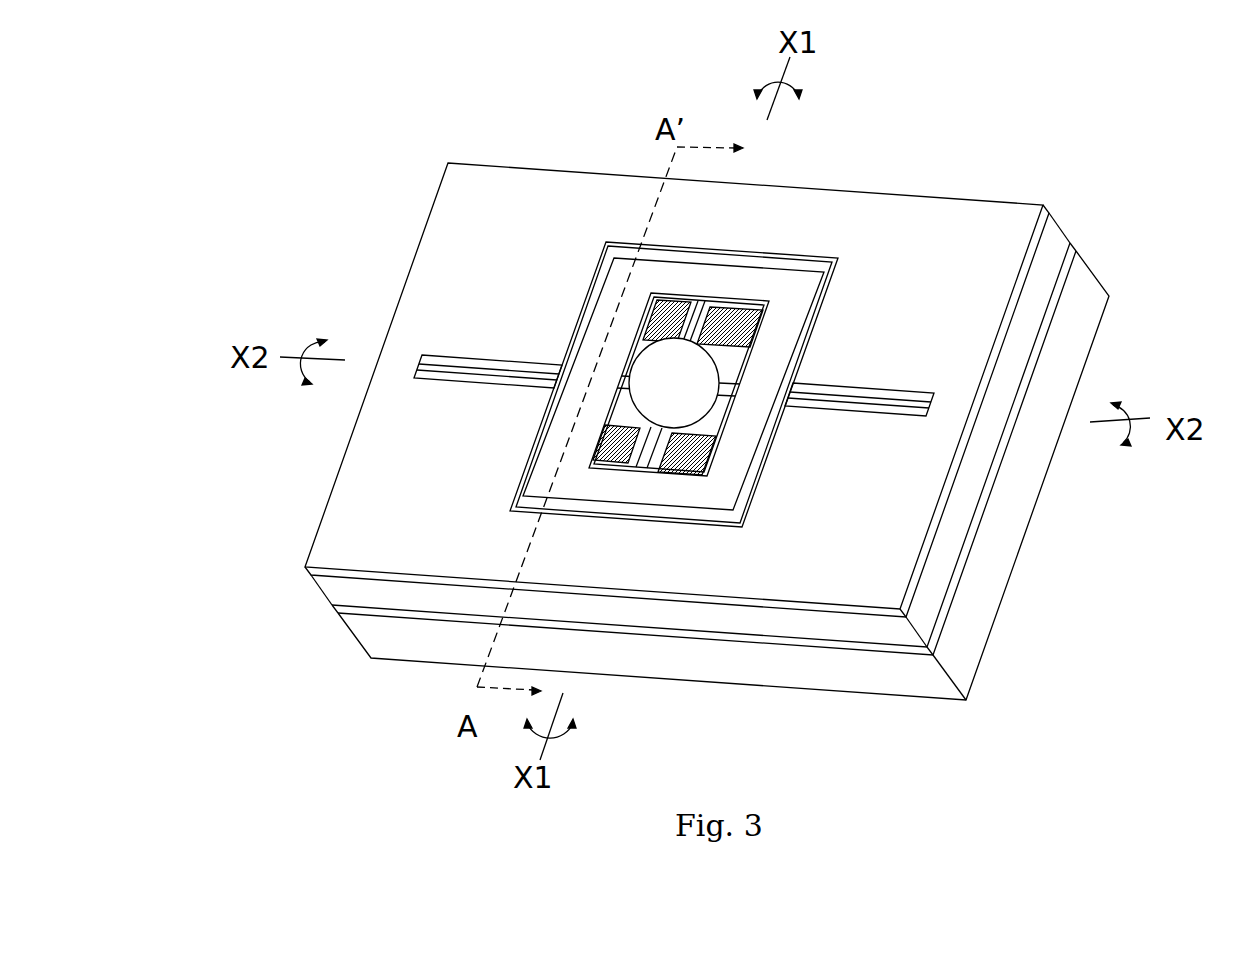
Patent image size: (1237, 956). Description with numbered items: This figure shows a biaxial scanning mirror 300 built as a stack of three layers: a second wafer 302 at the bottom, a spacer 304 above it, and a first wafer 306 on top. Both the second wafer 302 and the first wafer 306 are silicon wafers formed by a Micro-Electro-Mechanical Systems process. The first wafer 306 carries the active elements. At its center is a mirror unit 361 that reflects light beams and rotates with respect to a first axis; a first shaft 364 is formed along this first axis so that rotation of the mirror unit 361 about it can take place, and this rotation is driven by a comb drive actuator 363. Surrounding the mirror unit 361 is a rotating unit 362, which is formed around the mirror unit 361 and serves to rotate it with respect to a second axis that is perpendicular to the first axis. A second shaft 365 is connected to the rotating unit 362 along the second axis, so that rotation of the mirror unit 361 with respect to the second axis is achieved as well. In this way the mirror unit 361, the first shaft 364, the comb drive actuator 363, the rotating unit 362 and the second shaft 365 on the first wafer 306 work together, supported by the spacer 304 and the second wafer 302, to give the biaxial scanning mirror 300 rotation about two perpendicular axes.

The biaxial scanning mirror 300 is at (228, 64).
The second wafer 302 is at (997, 608).
The spacer 304 is at (367, 587).
The first wafer 306 is at (898, 215).
The mirror unit 361 is at (662, 403).
The rotating unit 362 is at (790, 305).
The comb drive actuator 363 is at (748, 302).
The first shaft 364 is at (708, 307).
The second shaft 365 is at (877, 407).